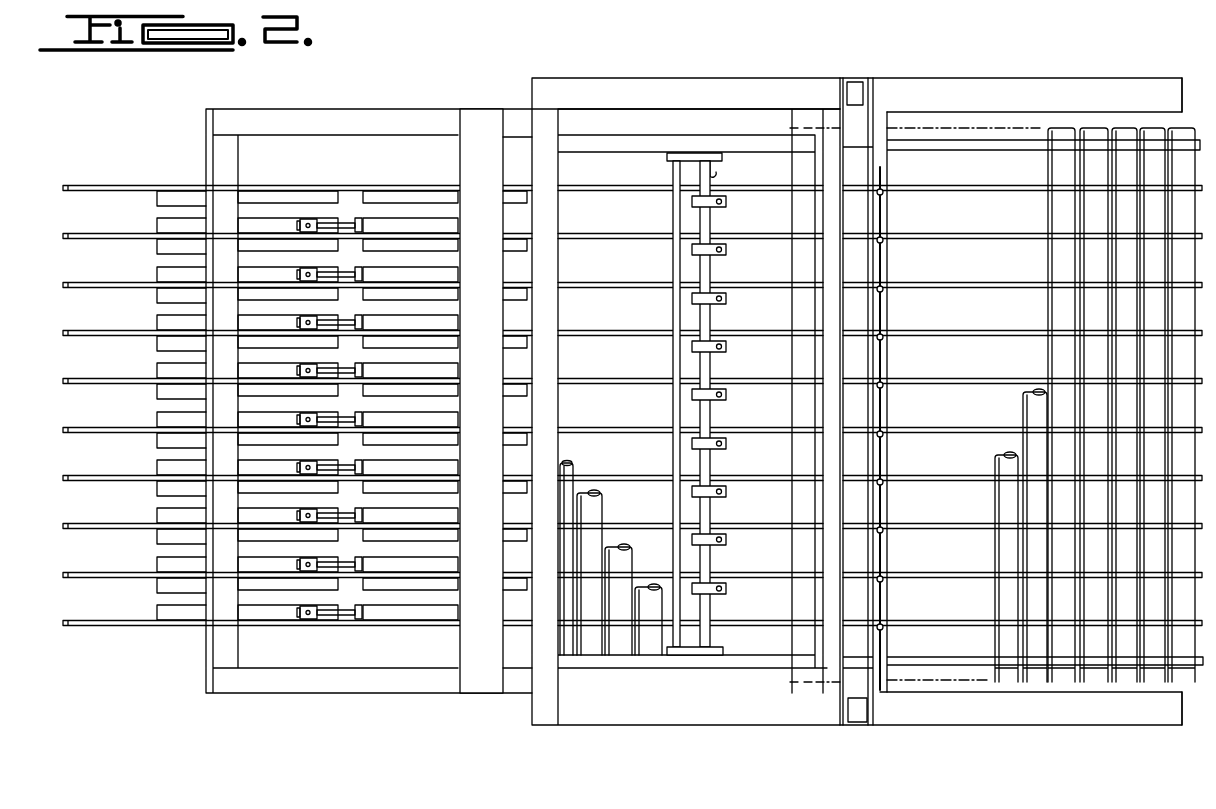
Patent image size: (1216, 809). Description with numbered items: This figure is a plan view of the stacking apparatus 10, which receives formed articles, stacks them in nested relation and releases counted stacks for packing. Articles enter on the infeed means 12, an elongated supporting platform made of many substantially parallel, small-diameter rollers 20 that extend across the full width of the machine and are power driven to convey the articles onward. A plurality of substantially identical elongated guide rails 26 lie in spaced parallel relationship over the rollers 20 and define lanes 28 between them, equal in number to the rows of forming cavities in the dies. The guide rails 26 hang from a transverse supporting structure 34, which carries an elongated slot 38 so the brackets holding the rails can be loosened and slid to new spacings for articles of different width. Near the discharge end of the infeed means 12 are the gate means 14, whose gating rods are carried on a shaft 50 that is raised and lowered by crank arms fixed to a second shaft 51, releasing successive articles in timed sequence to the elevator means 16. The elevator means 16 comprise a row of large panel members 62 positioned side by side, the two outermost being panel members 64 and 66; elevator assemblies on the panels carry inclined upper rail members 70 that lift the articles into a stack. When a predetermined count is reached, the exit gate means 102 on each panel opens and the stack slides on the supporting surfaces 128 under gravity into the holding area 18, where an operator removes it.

The stacking apparatus 10 is at (867, 426).
The infeed means 12 is at (1030, 704).
The gate means 14 is at (693, 454).
The elevator means 16 is at (523, 420).
The holding area 18 is at (607, 416).
The rollers 20 is at (622, 548).
The guide rails 26 is at (972, 525).
The lanes 28 is at (975, 316).
The supporting structure 34 is at (880, 162).
The elongated slot 38 is at (882, 605).
The shaft 50 is at (720, 465).
The second shaft 51 is at (671, 405).
The panel members 62 is at (418, 235).
The outermost panel member 64 is at (372, 183).
The outermost panel member 66 is at (163, 630).
The upper rail member 70 is at (445, 590).
The exit gate means 102 is at (302, 626).
The supporting surfaces 128 is at (163, 268).